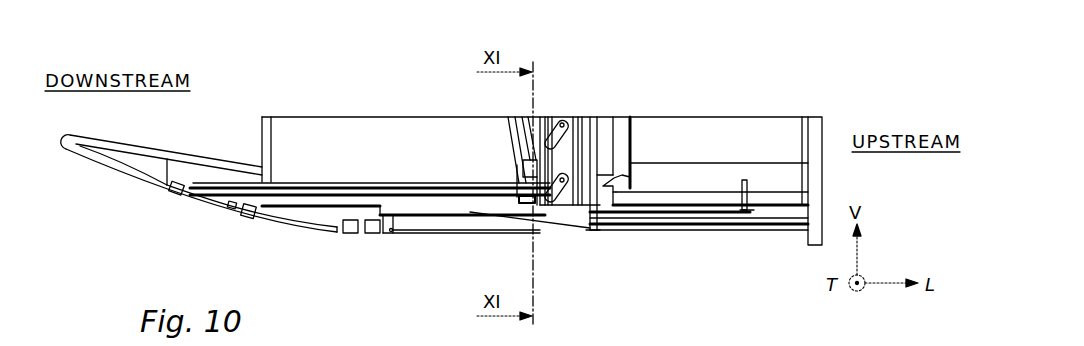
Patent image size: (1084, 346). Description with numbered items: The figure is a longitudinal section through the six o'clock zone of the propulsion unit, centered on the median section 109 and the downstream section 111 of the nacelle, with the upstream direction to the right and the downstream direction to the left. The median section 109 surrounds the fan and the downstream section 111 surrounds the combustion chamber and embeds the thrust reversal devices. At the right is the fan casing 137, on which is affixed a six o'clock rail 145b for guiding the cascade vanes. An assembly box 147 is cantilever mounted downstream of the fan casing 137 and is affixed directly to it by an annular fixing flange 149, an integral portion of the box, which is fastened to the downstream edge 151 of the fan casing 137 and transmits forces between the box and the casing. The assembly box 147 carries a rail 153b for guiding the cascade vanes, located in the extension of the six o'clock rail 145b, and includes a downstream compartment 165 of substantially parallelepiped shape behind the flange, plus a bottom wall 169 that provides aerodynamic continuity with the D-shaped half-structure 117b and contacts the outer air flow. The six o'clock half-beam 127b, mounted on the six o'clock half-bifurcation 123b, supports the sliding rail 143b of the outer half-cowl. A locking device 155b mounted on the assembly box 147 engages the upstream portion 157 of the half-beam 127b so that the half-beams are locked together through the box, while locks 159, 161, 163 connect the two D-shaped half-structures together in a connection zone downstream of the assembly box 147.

The median section 109 is at (685, 136).
The downstream section 111 is at (353, 136).
The D-shaped half-structure 117b is at (128, 152).
The six o'clock half-bifurcation 123b is at (300, 130).
The six o'clock half-beam 127b is at (320, 213).
The fan casing 137 is at (767, 162).
The sliding rail 143b is at (252, 180).
The six o'clock rail 145b is at (723, 215).
The assembly box 147 is at (560, 226).
The annular fixing flange 149 is at (576, 116).
The downstream edge 151 is at (608, 137).
The rail for guiding the cascade vanes 153b is at (430, 212).
The locking device 155b is at (527, 192).
The upstream portion 157 is at (541, 116).
The lock 159 is at (372, 240).
The lock 161 is at (240, 216).
The lock 163 is at (170, 193).
The downstream compartment 165 is at (455, 225).
The bottom wall 169 is at (527, 234).